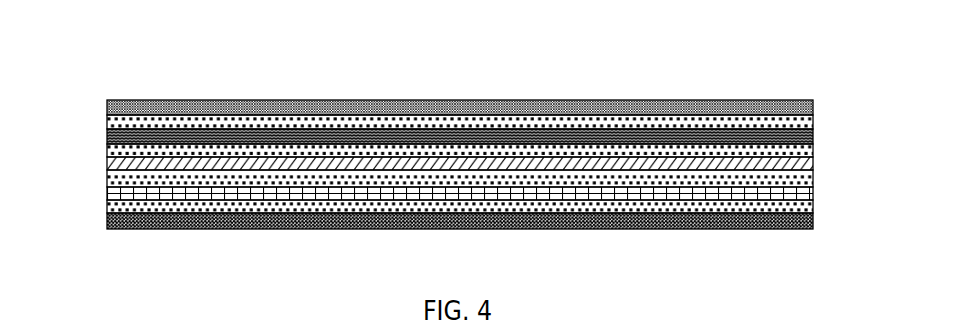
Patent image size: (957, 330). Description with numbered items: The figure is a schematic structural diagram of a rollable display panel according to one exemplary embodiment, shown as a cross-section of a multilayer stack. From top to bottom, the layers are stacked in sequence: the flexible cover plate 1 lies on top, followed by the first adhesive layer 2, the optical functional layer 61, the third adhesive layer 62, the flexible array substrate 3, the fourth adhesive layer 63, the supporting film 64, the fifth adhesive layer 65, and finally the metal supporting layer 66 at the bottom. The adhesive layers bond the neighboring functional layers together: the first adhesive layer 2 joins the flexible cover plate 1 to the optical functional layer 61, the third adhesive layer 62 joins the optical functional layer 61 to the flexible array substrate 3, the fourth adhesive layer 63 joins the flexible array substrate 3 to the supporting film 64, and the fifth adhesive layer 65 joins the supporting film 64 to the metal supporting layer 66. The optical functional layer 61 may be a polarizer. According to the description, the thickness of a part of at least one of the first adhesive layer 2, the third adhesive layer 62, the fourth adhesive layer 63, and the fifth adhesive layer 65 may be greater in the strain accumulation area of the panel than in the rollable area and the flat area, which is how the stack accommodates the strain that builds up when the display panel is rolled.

The flexible cover plate 1 is at (773, 105).
The first adhesive layer 2 is at (123, 122).
The optical functional layer 61 is at (813, 130).
The third adhesive layer 62 is at (124, 150).
The flexible array substrate 3 is at (805, 166).
The fourth adhesive layer 63 is at (125, 182).
The supporting film 64 is at (813, 194).
The fifth adhesive layer 65 is at (125, 210).
The metal supporting layer 66 is at (813, 225).